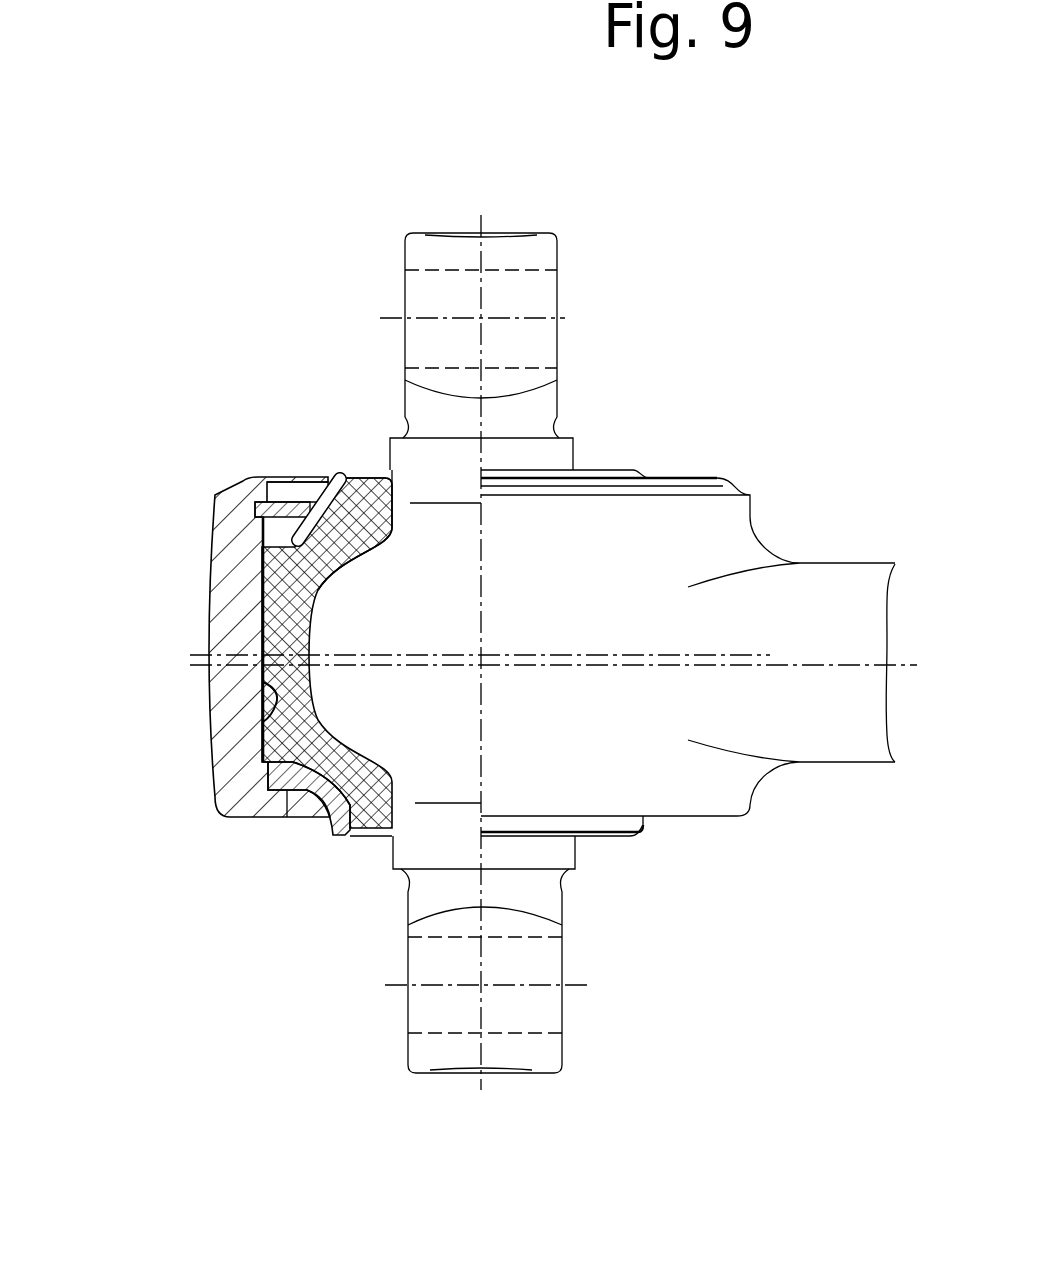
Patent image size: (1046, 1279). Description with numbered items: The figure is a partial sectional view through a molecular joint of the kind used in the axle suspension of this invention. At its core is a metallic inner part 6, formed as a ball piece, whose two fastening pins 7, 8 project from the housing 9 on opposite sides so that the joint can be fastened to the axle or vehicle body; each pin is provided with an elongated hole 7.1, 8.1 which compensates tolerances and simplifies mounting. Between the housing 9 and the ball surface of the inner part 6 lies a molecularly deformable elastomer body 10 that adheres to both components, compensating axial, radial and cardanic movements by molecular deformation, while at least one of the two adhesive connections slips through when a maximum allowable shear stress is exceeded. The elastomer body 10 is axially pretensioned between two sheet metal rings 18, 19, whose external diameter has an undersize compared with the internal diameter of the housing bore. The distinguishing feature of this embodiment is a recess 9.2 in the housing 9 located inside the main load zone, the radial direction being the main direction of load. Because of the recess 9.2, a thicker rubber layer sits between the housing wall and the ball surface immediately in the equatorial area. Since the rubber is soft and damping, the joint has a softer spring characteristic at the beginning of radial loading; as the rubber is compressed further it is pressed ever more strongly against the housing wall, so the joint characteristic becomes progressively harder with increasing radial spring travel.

The inner part 6 is at (355, 700).
The fastening pin 7 is at (543, 1057).
The elongated hole 7.1 is at (570, 990).
The fastening pin 8 is at (525, 255).
The elongated hole 8.1 is at (563, 320).
The housing 9 is at (235, 622).
The recess 9.2 is at (262, 722).
The elastomer body 10 is at (377, 500).
The sheet metal ring 18 is at (340, 483).
The sheet metal ring 19 is at (282, 772).